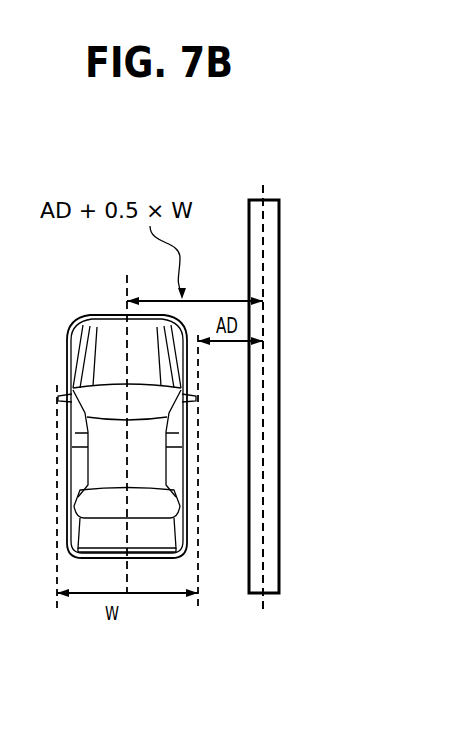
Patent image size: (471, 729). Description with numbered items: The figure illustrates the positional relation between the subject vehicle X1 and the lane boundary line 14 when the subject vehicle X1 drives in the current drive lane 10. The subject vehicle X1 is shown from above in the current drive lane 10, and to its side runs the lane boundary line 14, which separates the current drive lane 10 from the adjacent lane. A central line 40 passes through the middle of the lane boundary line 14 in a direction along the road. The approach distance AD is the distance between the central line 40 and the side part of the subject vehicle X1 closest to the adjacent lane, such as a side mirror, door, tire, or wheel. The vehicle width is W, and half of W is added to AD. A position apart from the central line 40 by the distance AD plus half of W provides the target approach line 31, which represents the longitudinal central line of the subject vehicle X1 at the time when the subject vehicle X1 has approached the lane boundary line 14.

The current drive lane 10 is at (132, 478).
The subject vehicle X1 is at (90, 317).
The target approach line 31 is at (125, 289).
The lane boundary line 14 is at (282, 567).
The central line 40 is at (270, 185).